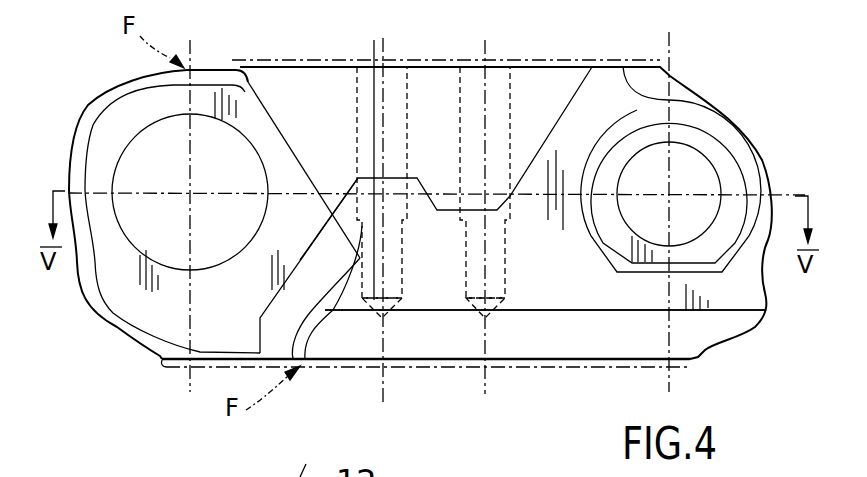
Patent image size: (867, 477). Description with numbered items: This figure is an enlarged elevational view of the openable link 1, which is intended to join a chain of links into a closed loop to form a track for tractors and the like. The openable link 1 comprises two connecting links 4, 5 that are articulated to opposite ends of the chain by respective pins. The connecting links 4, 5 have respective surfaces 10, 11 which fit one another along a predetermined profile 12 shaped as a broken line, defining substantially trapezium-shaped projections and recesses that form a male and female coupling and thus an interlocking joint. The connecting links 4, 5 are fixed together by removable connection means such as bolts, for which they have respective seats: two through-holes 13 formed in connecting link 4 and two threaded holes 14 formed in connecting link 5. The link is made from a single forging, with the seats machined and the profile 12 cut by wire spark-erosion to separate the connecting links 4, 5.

The openable link 1 is at (744, 97).
The connecting link 4 is at (291, 88).
The connecting link 5 is at (606, 298).
The surface 10 is at (613, 97).
The surface 11 is at (553, 132).
The profile 12 is at (570, 102).
The through-holes 13 is at (360, 104).
The threaded holes 14 is at (395, 292).